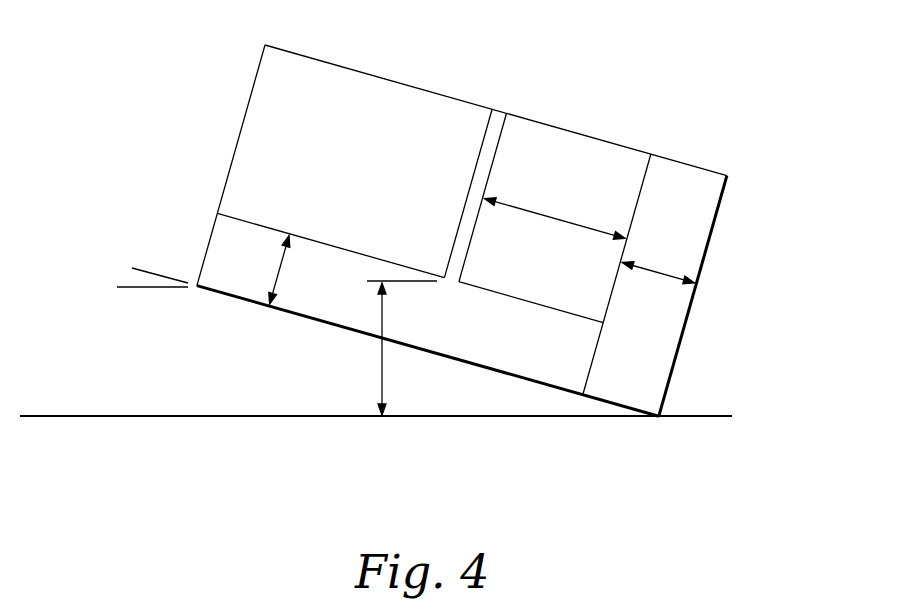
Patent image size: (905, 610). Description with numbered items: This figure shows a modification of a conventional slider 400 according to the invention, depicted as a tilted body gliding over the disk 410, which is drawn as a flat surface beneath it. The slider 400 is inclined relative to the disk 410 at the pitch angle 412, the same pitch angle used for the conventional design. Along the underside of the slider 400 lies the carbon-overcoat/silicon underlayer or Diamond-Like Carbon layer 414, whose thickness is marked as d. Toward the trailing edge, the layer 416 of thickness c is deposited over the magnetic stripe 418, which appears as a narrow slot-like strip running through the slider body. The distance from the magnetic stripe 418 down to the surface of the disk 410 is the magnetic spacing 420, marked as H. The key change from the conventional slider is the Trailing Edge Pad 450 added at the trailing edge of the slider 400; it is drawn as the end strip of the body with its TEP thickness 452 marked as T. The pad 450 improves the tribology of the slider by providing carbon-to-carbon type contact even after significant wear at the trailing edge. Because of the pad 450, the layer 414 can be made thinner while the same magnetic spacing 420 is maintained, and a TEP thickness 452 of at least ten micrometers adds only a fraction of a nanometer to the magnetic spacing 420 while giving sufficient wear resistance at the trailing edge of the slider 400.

The slider 400 is at (534, 64).
The disk 410 is at (58, 413).
The pitch angle 412 is at (133, 263).
The carbon-overcoat/silicon underlayer or Diamond-Like Carbon layer 414 is at (277, 270).
The layer 416 is at (577, 223).
The magnetic stripe 418 is at (492, 120).
The magnetic spacing 420 is at (380, 363).
The trailing edge pad 450 is at (722, 203).
The TEP thickness 452 is at (670, 278).